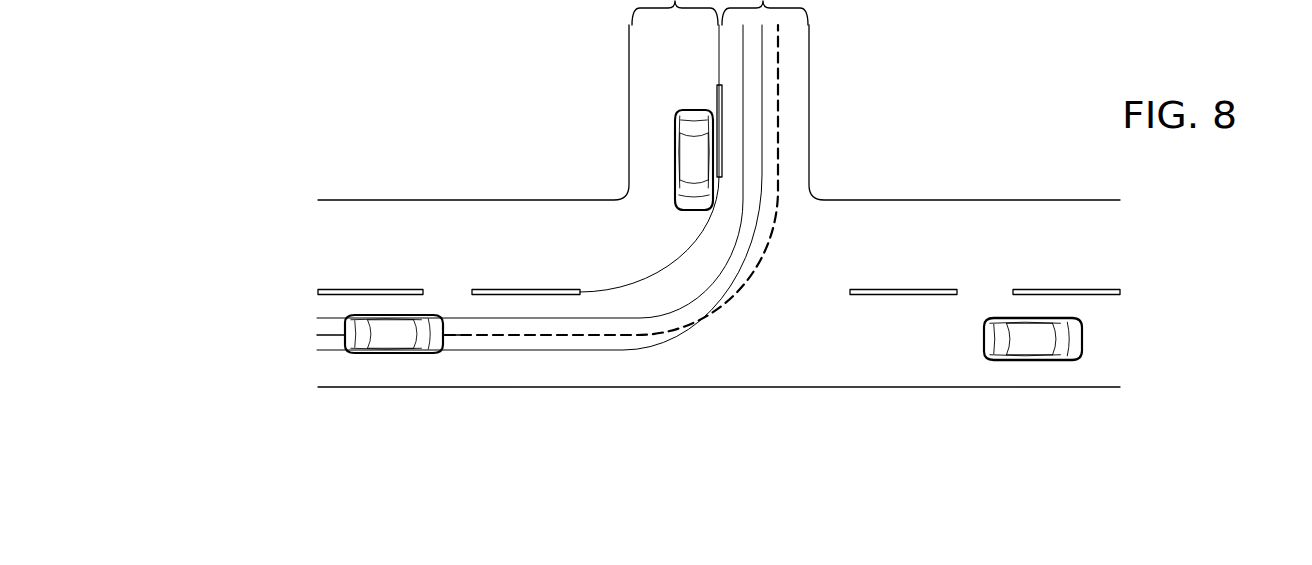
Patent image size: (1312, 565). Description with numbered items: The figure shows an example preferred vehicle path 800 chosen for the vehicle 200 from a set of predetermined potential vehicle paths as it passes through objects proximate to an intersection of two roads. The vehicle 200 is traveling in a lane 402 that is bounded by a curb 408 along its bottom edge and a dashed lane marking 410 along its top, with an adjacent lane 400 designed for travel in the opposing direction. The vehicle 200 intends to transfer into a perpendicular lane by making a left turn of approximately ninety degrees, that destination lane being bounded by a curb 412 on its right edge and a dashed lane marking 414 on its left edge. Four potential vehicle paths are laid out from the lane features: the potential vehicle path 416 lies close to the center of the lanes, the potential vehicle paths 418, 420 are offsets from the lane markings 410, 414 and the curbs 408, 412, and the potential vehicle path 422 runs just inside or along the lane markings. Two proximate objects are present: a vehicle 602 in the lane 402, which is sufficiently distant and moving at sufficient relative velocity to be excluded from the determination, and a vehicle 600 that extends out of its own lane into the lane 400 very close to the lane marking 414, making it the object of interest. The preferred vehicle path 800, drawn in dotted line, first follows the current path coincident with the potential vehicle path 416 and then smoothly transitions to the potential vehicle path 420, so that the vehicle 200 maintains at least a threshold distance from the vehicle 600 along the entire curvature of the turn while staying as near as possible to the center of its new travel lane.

The vehicle 200 is at (393, 353).
The lane 400 is at (305, 200).
The lane 402 is at (305, 297).
The curb 408 is at (477, 387).
The dashed lane marking 410 is at (548, 289).
The curb 412 is at (809, 133).
The dashed lane marking 414 is at (717, 90).
The potential vehicle path 416 is at (538, 333).
The potential vehicle path 418 is at (606, 317).
The potential vehicle path 420 is at (562, 352).
The potential vehicle path 422 is at (617, 292).
The vehicle 600 is at (675, 148).
The vehicle 602 is at (1078, 326).
The preferred vehicle path 800 is at (695, 325).